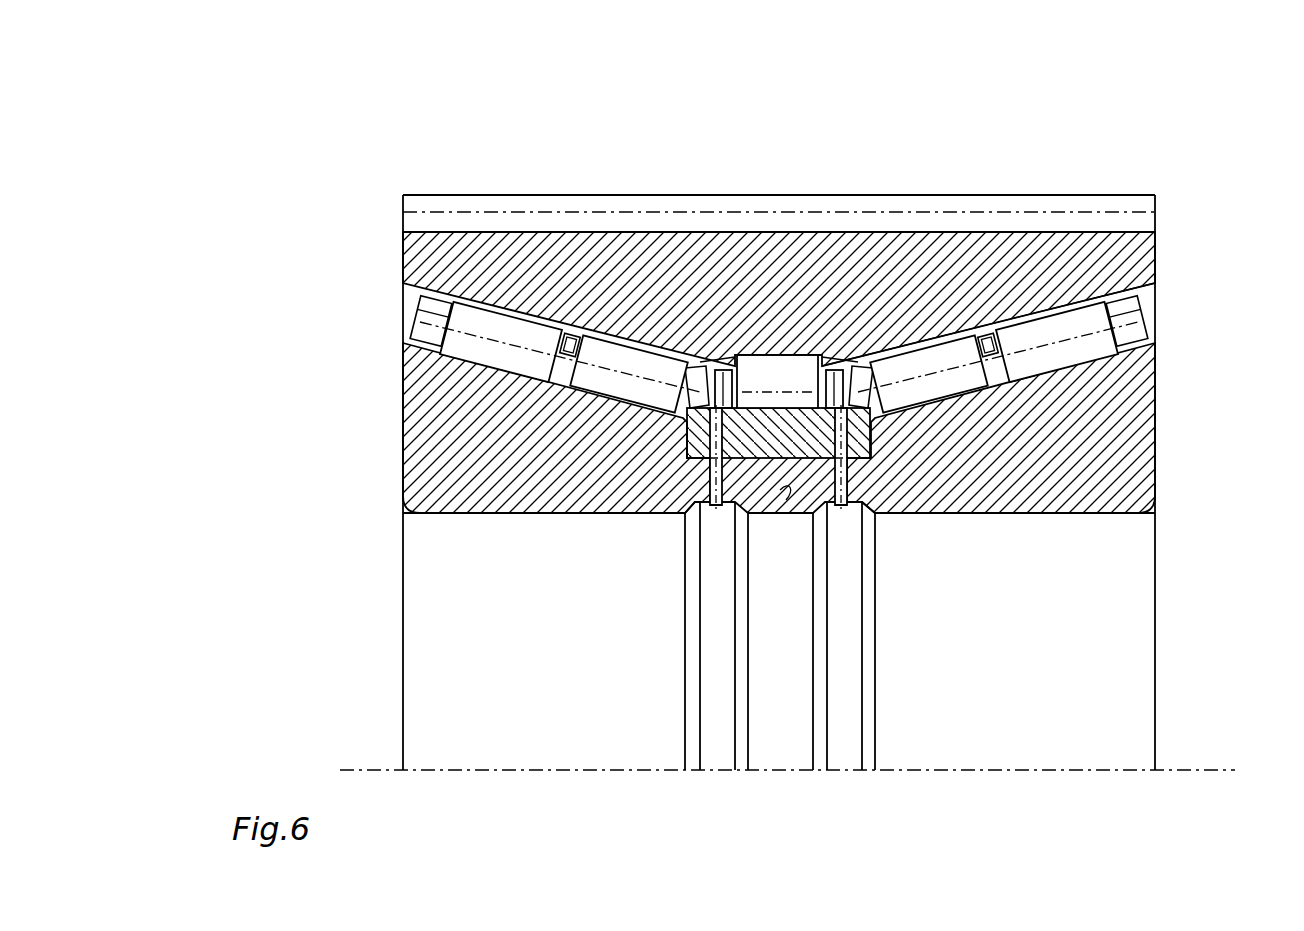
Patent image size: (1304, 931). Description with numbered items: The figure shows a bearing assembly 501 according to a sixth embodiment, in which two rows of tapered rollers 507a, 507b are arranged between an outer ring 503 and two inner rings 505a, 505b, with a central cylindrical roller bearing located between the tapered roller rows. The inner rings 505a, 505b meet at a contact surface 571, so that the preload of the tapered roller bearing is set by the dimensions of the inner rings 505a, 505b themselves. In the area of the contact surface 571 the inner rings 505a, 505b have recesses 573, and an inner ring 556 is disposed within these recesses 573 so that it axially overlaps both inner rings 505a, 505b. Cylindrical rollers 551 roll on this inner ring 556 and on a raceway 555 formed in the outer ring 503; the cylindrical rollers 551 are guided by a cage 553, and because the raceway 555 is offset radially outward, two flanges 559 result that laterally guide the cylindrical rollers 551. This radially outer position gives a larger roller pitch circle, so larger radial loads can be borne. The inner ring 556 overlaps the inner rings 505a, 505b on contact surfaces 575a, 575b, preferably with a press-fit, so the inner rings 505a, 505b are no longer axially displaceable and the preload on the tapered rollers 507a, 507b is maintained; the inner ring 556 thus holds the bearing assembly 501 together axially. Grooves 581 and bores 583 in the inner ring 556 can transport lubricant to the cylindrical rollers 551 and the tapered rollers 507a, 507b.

The bearing assembly 501 is at (318, 273).
The outer ring 503 is at (1147, 253).
The inner ring 505a is at (410, 452).
The inner ring 505b is at (1148, 457).
The tapered rollers 507a is at (779, 342).
The tapered rollers 507b is at (779, 373).
The cylindrical rollers 551 is at (779, 381).
The cage 553 is at (868, 362).
The raceway 555 is at (772, 358).
The inner ring 556 is at (862, 462).
The flanges 559 is at (730, 360).
The contact surface 571 is at (750, 495).
The recesses 573 is at (690, 428).
The contact surface 575a is at (788, 520).
The contact surface 575b is at (797, 550).
The grooves 581 is at (700, 455).
The bores 583 is at (690, 432).